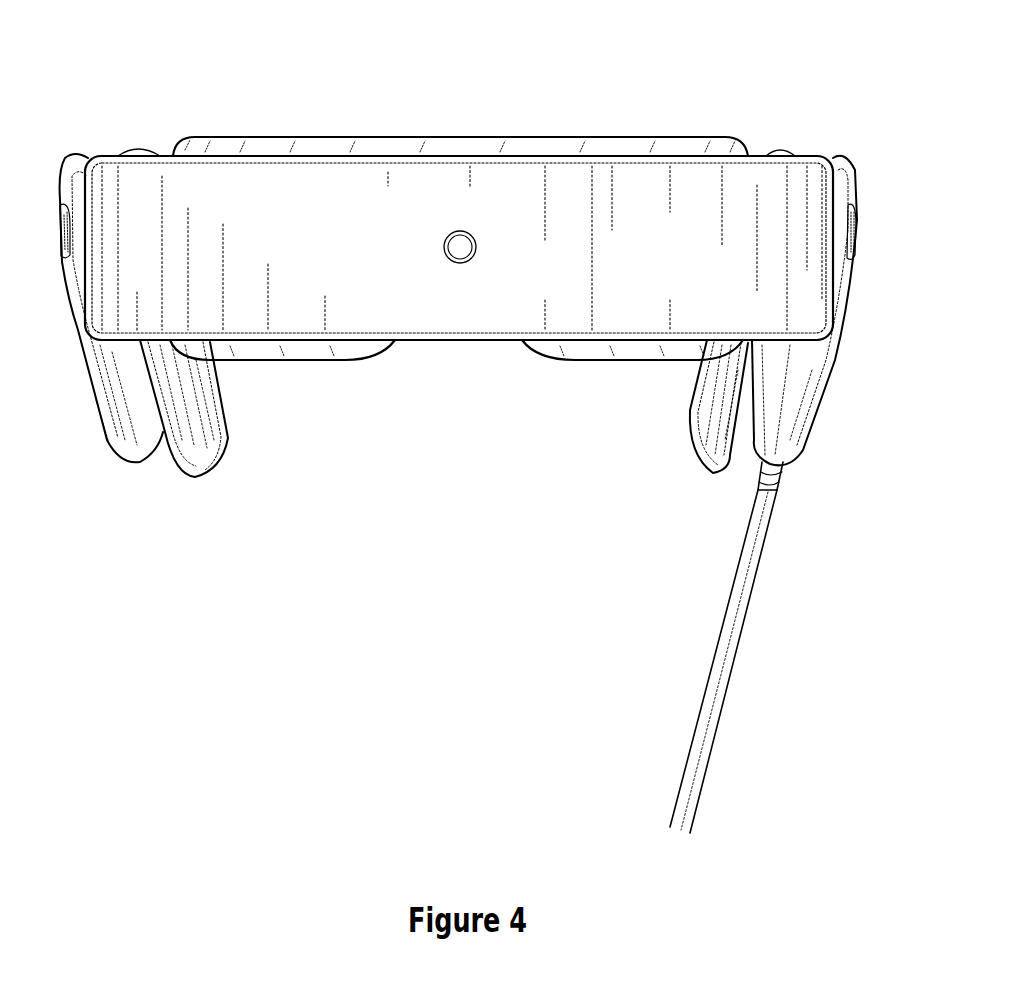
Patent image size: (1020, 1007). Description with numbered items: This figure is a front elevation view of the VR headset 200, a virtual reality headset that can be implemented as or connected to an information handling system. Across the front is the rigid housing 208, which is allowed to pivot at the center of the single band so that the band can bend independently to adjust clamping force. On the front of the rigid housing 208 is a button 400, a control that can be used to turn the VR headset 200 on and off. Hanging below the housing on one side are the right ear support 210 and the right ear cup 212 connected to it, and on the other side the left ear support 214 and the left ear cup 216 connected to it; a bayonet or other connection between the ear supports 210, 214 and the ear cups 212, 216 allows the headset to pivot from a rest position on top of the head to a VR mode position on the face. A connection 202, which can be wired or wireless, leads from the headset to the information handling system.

The VR headset 200 is at (822, 50).
The connection 202 is at (755, 565).
The rigid housing 208 is at (533, 188).
The right ear support 210 is at (112, 432).
The right ear cup 212 is at (207, 437).
The left ear support 214 is at (808, 393).
The left ear cup 216 is at (690, 413).
The button 400 is at (455, 250).